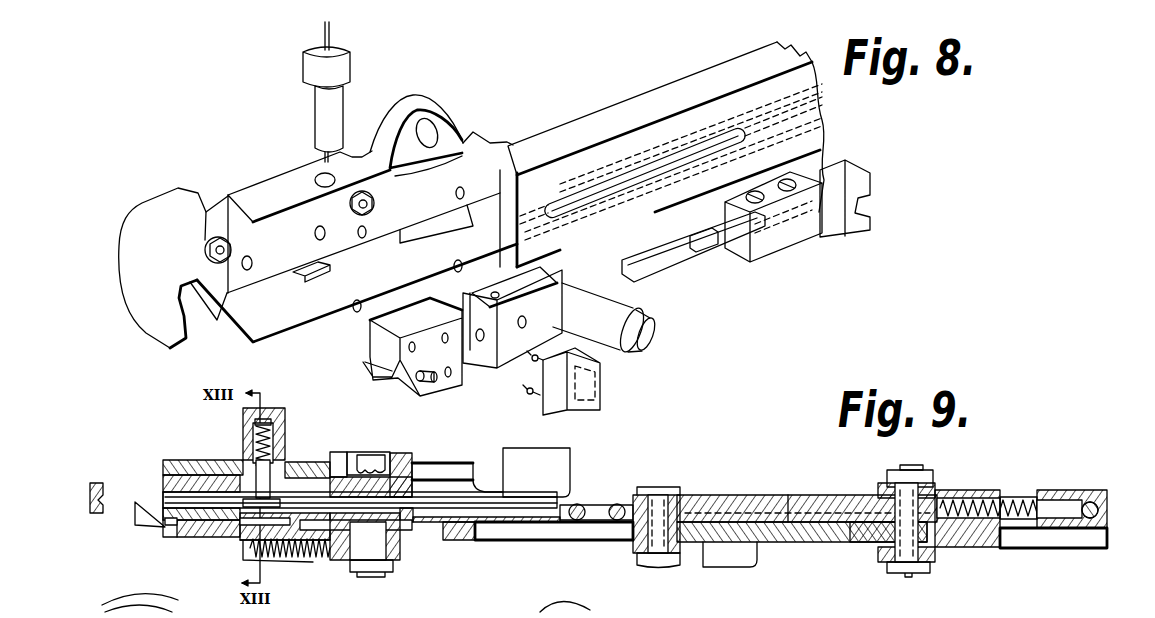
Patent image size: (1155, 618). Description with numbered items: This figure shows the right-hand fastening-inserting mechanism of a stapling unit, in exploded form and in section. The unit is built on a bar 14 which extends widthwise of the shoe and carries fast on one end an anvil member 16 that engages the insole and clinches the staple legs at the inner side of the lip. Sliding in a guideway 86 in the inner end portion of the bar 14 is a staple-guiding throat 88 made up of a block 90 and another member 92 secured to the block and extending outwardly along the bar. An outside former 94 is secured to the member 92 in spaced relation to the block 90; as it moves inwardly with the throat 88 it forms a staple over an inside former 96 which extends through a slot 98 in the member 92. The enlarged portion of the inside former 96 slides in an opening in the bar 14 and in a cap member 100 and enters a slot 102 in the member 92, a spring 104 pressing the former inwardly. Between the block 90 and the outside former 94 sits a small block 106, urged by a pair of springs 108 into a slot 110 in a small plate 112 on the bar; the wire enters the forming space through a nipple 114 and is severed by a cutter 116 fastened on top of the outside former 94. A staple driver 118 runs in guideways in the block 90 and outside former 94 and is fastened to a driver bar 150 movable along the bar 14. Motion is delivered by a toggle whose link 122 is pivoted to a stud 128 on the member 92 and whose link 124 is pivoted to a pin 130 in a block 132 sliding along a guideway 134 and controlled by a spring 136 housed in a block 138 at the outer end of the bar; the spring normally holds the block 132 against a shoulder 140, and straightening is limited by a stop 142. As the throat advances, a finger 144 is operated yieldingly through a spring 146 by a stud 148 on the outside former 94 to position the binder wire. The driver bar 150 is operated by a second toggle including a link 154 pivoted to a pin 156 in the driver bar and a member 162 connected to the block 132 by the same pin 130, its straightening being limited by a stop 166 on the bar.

In FIG. 8, the bar 14 is at (637, 101).
In FIG. 9, the bar 14 is at (450, 467).
In FIG. 8, the anvil member 16 is at (143, 313).
In FIG. 9, the anvil member 16 is at (87, 503).
In FIG. 8, the guideway 86 is at (299, 315).
In FIG. 8, the staple-guiding throat 88 is at (384, 380).
In FIG. 9, the staple-guiding throat 88 is at (162, 483).
In FIG. 8, the block 90 is at (442, 382).
In FIG. 9, the block 90 is at (141, 521).
In FIG. 8, the member 92 is at (370, 337).
In FIG. 9, the member 92 is at (187, 462).
In FIG. 8, the outside former 94 is at (520, 348).
In FIG. 9, the outside former 94 is at (323, 560).
In FIG. 8, the inside former 96 is at (324, 266).
In FIG. 9, the inside former 96 is at (240, 473).
In FIG. 9, the slot 98 is at (332, 462).
In FIG. 9, the cap member 100 is at (279, 413).
In FIG. 9, the slot 102 is at (283, 460).
In FIG. 9, the spring 104 is at (253, 423).
In FIG. 8, the small block 106 is at (600, 402).
In FIG. 9, the small block 106 is at (242, 568).
In FIG. 8, the springs 108 is at (528, 390).
In FIG. 9, the slot 110 is at (220, 537).
In FIG. 9, the small plate 112 is at (185, 527).
In FIG. 8, the nipple 114 is at (322, 116).
In FIG. 8, the cutter 116 is at (483, 290).
In FIG. 8, the staple driver 118 is at (645, 267).
In FIG. 9, the staple driver 118 is at (525, 503).
In FIG. 9, the link 122 is at (417, 460).
In FIG. 9, the link 124 is at (877, 487).
In FIG. 8, the stud 128 is at (520, 262).
In FIG. 9, the stud 128 is at (372, 458).
In FIG. 9, the pin 130 is at (913, 560).
In FIG. 9, the block 132 is at (972, 537).
In FIG. 9, the guideway 134 is at (1057, 537).
In FIG. 9, the spring 136 is at (1017, 497).
In FIG. 9, the block 138 is at (1087, 492).
In FIG. 9, the shoulder 140 is at (853, 533).
In FIG. 9, the stop 142 is at (570, 456).
In FIG. 9, the finger 144 is at (137, 518).
In FIG. 9, the spring 146 is at (333, 553).
In FIG. 8, the stud 148 is at (650, 309).
In FIG. 9, the stud 148 is at (372, 550).
In FIG. 8, the driver bar 150 is at (843, 218).
In FIG. 9, the driver bar 150 is at (717, 497).
In FIG. 9, the link 154 is at (688, 557).
In FIG. 9, the pin 156 is at (660, 540).
In FIG. 9, the member 162 is at (885, 563).
In FIG. 9, the stop 166 is at (742, 560).